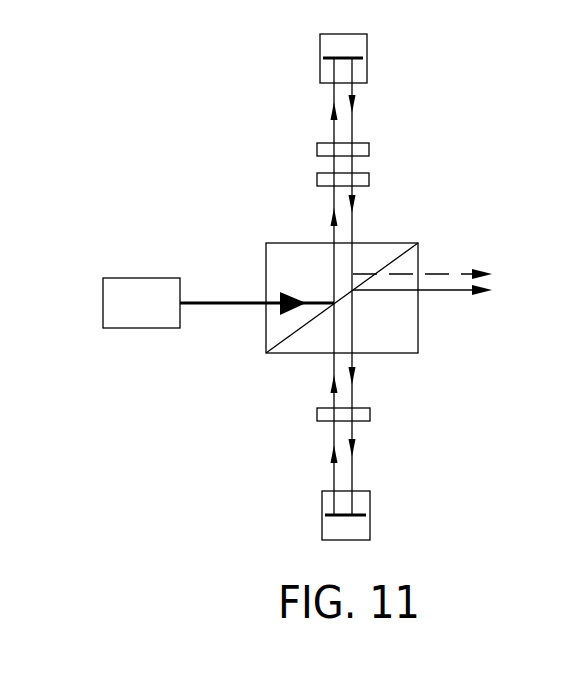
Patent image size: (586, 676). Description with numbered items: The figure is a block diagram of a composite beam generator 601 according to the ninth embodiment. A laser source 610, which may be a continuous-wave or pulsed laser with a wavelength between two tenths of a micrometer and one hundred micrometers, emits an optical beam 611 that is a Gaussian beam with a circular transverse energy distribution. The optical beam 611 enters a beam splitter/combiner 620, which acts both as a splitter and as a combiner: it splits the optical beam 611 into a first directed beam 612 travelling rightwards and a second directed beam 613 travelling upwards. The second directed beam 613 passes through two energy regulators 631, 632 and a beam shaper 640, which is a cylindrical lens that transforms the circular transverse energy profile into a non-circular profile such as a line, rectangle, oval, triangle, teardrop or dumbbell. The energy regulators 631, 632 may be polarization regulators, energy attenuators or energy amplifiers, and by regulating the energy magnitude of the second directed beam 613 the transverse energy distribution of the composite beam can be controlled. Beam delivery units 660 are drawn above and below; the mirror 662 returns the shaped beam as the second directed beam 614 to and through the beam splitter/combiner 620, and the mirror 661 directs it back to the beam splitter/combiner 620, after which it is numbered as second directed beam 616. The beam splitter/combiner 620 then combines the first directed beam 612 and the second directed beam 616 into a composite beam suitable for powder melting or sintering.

The composite beam generator 601 is at (62, 103).
The laser source 610 is at (133, 278).
The optical beam 611 is at (232, 306).
The first directed beam 612 is at (448, 272).
The second directed beam 613 is at (334, 240).
The second directed beam 614 is at (334, 140).
The second directed beam (output beam) 616 is at (448, 292).
The beam splitter/combiner 620 is at (266, 268).
The energy regulator 631 is at (317, 414).
The energy regulator 632 is at (369, 178).
The beam shaper 640 is at (369, 148).
The beam delivery unit 660 is at (320, 50).
The mirror 661 is at (325, 517).
The mirror 662 is at (345, 57).